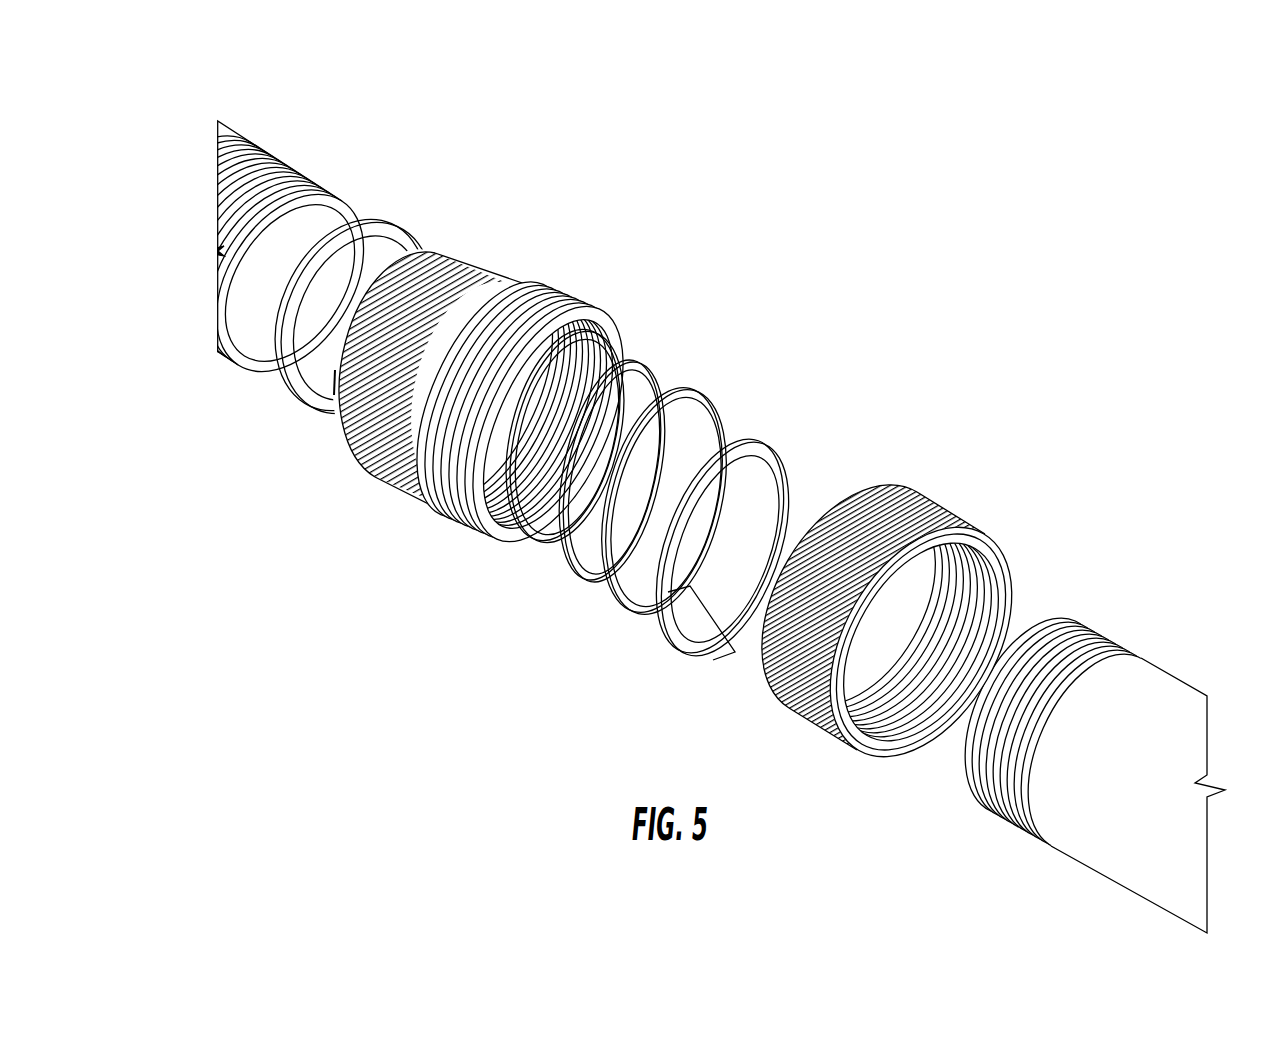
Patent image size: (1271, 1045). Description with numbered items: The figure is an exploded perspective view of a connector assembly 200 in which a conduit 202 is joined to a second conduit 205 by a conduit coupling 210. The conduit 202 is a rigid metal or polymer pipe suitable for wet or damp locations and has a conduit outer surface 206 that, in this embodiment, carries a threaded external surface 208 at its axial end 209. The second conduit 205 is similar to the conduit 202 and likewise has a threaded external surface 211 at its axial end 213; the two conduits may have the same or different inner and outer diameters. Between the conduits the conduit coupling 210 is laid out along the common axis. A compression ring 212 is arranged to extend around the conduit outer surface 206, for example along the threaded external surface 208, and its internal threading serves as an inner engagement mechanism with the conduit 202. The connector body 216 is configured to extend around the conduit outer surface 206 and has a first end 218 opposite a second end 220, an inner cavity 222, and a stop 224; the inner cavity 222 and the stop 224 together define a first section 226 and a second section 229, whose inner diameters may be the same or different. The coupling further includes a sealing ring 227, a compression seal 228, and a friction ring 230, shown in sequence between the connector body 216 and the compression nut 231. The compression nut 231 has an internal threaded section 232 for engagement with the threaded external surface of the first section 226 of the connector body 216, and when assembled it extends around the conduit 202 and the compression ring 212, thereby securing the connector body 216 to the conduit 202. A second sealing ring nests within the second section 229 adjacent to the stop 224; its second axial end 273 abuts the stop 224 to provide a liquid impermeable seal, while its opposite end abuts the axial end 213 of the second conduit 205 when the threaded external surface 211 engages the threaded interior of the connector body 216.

The connector assembly 200 is at (668, 486).
The conduit 202 is at (1089, 742).
The second conduit 205 is at (244, 220).
The conduit outer surface 206 is at (1078, 846).
The threaded external surface 208 is at (997, 812).
The axial end 209 is at (1065, 712).
The conduit coupling 210 is at (823, 235).
The threaded external surface 211 is at (257, 140).
The compression ring 212 is at (887, 611).
The axial end 213 is at (350, 208).
The connector body 216 is at (466, 395).
The first end 218 is at (417, 360).
The second end 220 is at (590, 332).
The inner cavity 222 is at (505, 498).
The stop 224 is at (518, 443).
The first section 226 is at (447, 515).
The sealing ring 227 is at (640, 372).
The compression seal 228 is at (693, 398).
The second section 229 is at (370, 470).
The friction ring 230 is at (750, 420).
The compression nut 231 is at (940, 500).
The internal threaded section 232 is at (913, 748).
The second axial end 273 is at (318, 425).